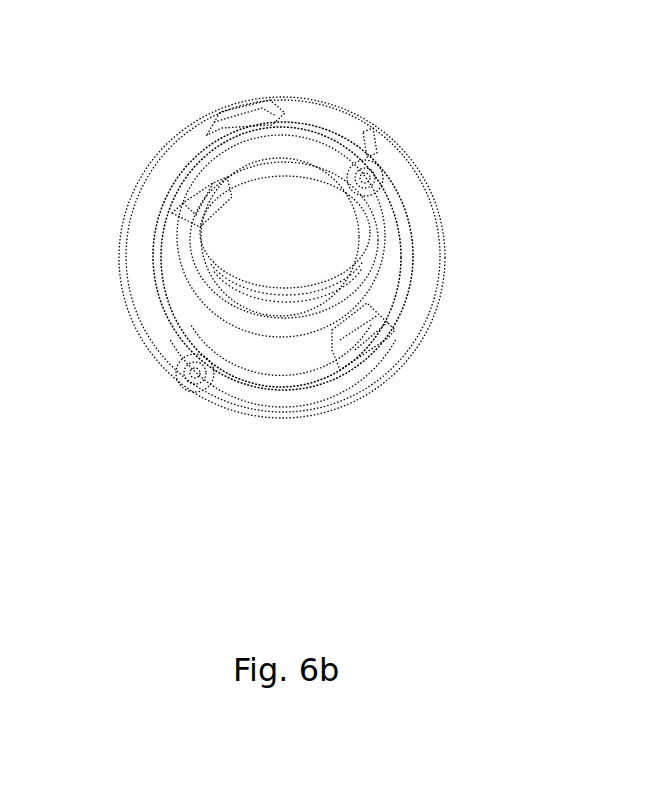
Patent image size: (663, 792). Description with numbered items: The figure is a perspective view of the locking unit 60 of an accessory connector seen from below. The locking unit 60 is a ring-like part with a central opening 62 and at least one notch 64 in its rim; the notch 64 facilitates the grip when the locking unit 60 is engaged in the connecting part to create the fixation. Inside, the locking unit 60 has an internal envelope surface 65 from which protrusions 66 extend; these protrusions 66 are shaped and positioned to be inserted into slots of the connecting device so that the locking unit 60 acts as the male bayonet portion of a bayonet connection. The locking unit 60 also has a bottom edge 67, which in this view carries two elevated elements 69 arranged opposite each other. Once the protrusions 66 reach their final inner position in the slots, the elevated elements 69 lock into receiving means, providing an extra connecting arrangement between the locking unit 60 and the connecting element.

The locking unit 60 is at (348, 440).
The opening 62 is at (283, 195).
The notch 64 is at (240, 120).
The internal envelope surface 65 is at (248, 358).
The protrusion 66 is at (207, 207).
The bottom edge 67 is at (280, 403).
The elevated element 69 is at (370, 180).